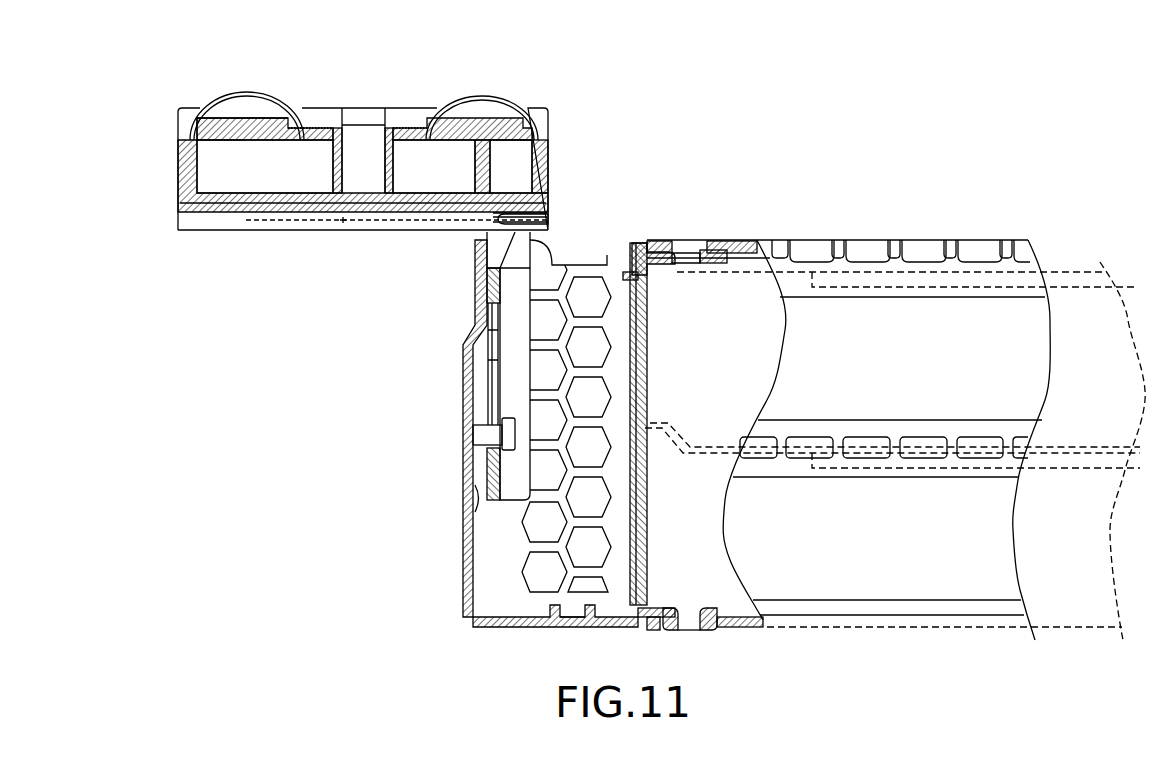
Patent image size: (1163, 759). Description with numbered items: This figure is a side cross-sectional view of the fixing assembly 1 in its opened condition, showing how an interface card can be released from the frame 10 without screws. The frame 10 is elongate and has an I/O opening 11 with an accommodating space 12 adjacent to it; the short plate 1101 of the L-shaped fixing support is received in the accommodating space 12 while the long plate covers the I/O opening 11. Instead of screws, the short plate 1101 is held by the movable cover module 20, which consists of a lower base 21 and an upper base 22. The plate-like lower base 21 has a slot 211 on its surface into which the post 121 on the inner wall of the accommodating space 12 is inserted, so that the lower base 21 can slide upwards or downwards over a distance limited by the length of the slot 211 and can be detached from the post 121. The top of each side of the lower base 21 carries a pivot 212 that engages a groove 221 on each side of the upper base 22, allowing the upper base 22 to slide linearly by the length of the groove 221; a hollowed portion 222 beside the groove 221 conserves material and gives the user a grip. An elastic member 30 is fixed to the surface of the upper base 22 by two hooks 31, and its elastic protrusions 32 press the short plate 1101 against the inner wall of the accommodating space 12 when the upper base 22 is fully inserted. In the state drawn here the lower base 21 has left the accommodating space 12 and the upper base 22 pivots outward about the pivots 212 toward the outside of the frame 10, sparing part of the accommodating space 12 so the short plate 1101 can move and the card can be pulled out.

The fixing assembly 1 is at (403, 563).
The frame 10 is at (933, 226).
The I/O opening 11 is at (876, 330).
The short plate 1101 is at (628, 328).
The accommodating space 12 is at (518, 602).
The post 121 is at (490, 437).
The movable cover module 20 is at (359, 84).
The lower base 21 is at (478, 288).
The slot 211 is at (495, 391).
The pivot 212 is at (548, 251).
The upper base 22 is at (218, 213).
The groove 221 is at (343, 220).
The hollowed portion 222 is at (222, 174).
The elastic member 30 is at (220, 92).
The hook 31 is at (218, 141).
The elastic protrusion 32 is at (247, 93).